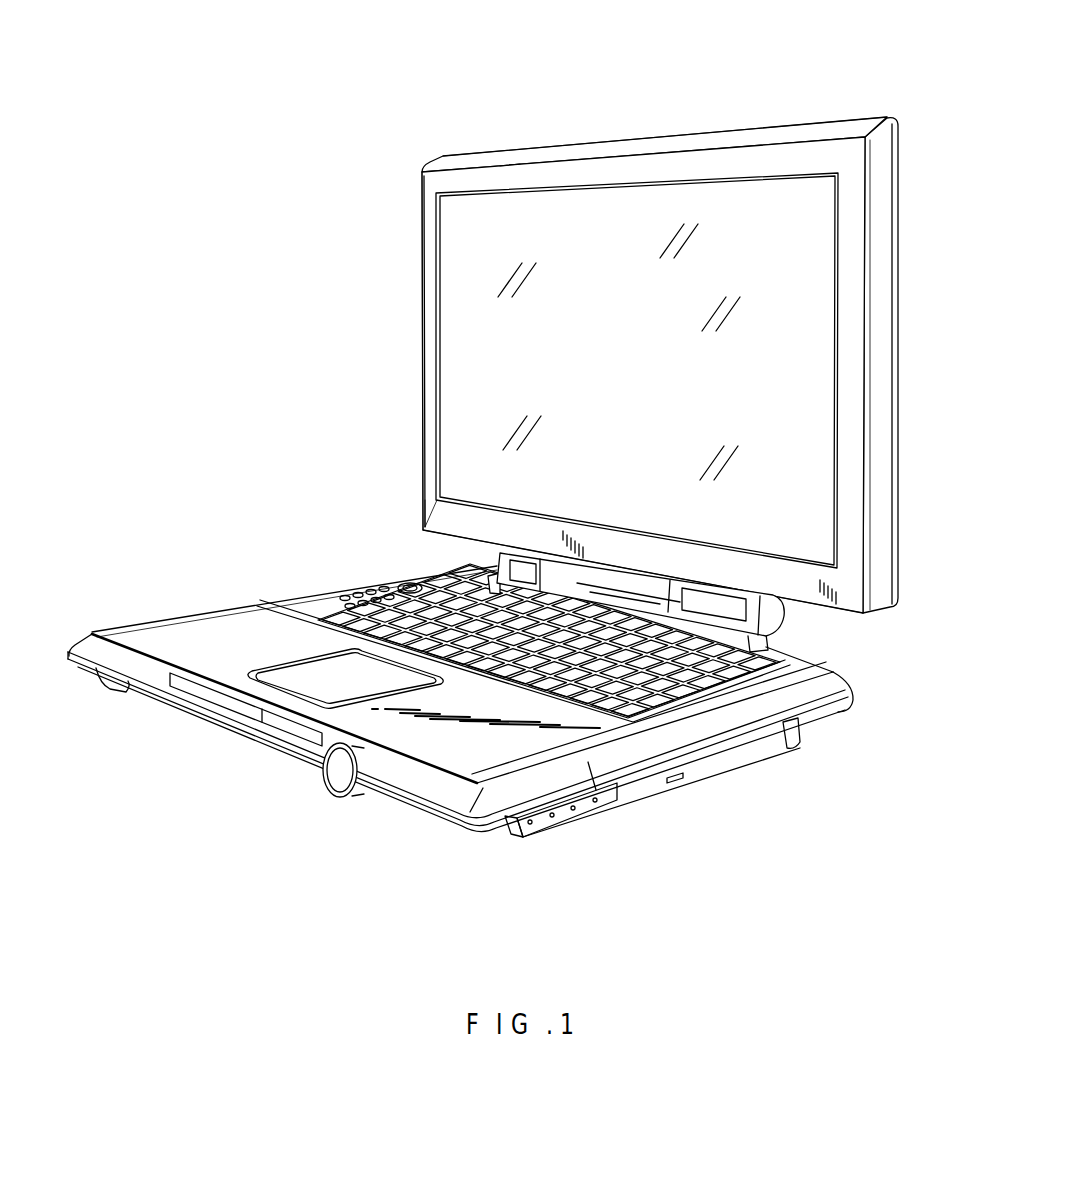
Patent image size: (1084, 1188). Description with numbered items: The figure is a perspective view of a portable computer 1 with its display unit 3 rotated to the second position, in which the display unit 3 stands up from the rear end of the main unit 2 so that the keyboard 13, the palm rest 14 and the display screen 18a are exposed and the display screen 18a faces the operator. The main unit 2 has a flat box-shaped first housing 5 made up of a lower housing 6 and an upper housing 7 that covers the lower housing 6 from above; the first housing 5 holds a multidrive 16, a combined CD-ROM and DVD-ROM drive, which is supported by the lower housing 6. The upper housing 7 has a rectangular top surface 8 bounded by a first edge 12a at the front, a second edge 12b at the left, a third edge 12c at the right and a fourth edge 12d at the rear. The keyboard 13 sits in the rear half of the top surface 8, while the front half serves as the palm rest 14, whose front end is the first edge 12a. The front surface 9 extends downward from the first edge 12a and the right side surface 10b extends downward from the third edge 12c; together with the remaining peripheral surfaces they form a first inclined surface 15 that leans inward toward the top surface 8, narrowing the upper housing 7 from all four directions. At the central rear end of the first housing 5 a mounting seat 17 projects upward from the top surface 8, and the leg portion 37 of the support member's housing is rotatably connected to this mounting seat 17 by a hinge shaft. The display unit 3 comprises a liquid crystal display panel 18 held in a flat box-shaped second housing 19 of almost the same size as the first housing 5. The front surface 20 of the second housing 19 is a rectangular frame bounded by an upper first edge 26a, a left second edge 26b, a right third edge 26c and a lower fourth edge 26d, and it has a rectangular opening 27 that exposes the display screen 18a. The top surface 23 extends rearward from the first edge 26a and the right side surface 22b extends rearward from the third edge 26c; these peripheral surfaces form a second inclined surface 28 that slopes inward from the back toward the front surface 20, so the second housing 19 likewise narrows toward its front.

The portable computer 1 is at (742, 97).
The main unit 2 is at (414, 828).
The display unit 3 is at (410, 278).
The first housing 5 is at (650, 864).
The lower housing 6 is at (544, 835).
The upper housing 7 is at (593, 772).
The top surface 8 is at (430, 750).
The front surface 9 is at (155, 675).
The right side surface 10b is at (718, 728).
The first edge 12a is at (265, 710).
The second edge 12b is at (228, 606).
The third edge 12c is at (757, 703).
The fourth edge 12d is at (780, 658).
The keyboard 13 is at (400, 620).
The palm rest 14 is at (198, 640).
The first inclined surface 15 is at (527, 790).
The multidrive 16 is at (693, 765).
The mounting seat 17 is at (503, 590).
The liquid crystal display panel 18 is at (780, 195).
The display screen 18a is at (619, 352).
The second housing 19 is at (453, 160).
The front surface 20 is at (587, 175).
The right side surface 22b is at (883, 345).
The top surface 23 is at (503, 160).
The first edge 26a is at (655, 145).
The second edge 26b is at (418, 339).
The third edge 26c is at (868, 405).
The fourth edge 26d is at (494, 535).
The rectangular opening 27 is at (447, 380).
The second inclined surface 28 is at (883, 167).
The leg portion 37 is at (684, 592).